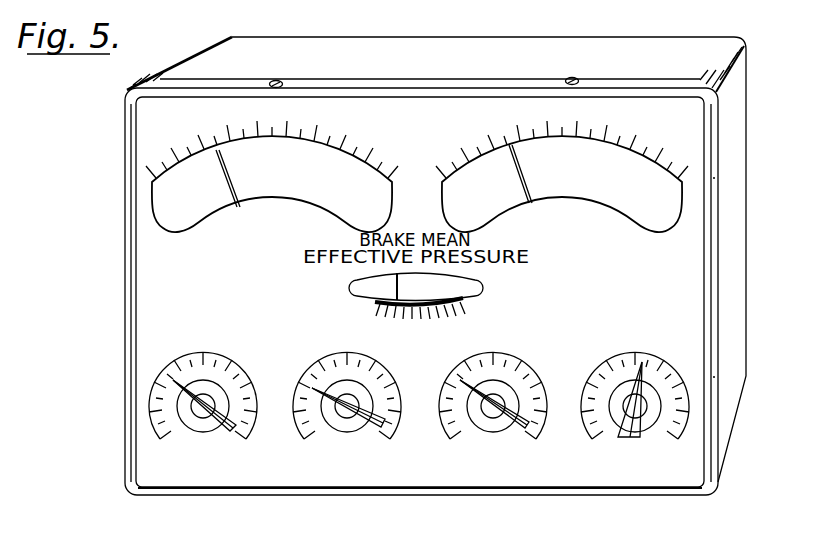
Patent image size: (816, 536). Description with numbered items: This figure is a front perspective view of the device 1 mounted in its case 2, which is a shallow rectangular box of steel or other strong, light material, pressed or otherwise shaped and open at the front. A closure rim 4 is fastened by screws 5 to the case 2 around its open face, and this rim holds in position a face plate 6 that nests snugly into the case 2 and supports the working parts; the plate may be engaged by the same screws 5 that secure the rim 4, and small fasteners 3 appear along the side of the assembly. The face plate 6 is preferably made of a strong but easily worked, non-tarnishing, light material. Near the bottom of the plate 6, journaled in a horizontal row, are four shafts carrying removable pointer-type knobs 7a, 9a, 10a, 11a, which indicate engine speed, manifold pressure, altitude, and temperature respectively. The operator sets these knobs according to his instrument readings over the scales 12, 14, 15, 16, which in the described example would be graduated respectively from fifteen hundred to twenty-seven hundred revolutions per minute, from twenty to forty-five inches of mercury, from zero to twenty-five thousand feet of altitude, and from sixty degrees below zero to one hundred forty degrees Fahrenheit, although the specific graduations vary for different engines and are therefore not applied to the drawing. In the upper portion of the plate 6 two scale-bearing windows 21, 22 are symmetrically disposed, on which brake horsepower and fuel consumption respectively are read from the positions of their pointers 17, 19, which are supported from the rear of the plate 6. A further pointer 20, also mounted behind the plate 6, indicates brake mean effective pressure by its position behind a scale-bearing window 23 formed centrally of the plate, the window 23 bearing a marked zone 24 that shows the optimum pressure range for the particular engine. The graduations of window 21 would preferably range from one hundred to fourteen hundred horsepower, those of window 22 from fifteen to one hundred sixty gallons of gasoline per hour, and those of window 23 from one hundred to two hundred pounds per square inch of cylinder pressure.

The device 1 is at (125, 110).
The case 2 is at (740, 340).
The side fastening screws 3 is at (714, 284).
The closure rim 4 is at (712, 270).
The screws 5 is at (288, 84).
The face plate 6 is at (201, 298).
The pointer-type knob 7a is at (176, 378).
The pointer-type knob 9a is at (315, 390).
The pointer-type knob 10a is at (466, 382).
The pointer-type knob 11a is at (641, 376).
The scale 12 is at (228, 366).
The scale 14 is at (372, 366).
The scale 15 is at (516, 367).
The scale 16 is at (665, 362).
The pointer 17 is at (234, 205).
The pointer 19 is at (527, 203).
The pointer 20 is at (398, 286).
The scale-bearing window 21 is at (336, 148).
The scale-bearing window 22 is at (614, 141).
The scale-bearing window 23 is at (462, 300).
The zone 24 is at (416, 317).